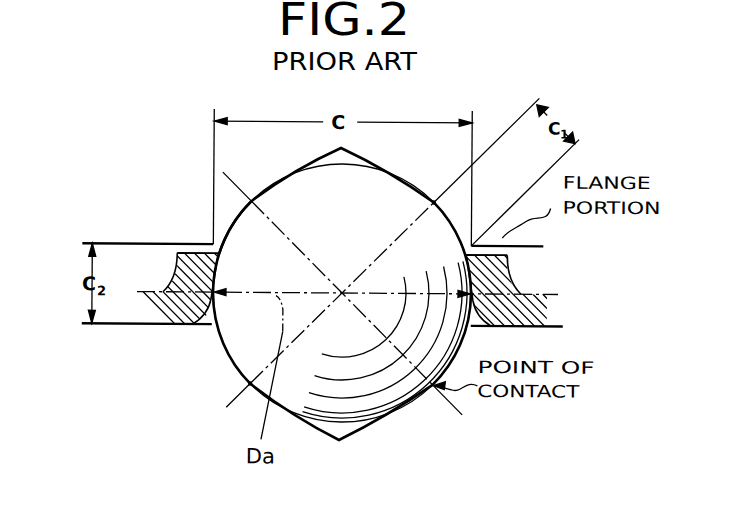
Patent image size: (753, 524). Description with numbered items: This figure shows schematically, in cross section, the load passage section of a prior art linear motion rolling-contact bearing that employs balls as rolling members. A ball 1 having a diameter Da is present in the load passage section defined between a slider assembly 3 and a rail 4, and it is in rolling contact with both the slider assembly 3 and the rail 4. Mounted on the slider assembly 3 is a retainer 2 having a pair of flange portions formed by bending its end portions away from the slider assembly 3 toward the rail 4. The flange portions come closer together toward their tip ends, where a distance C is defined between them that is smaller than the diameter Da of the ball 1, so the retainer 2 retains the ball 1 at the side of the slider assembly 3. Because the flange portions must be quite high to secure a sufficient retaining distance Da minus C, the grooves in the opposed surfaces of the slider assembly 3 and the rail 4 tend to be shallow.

The ball 1 is at (402, 173).
The retainer 2 is at (510, 282).
The slider assembly 3 is at (218, 363).
The rail 4 is at (228, 203).